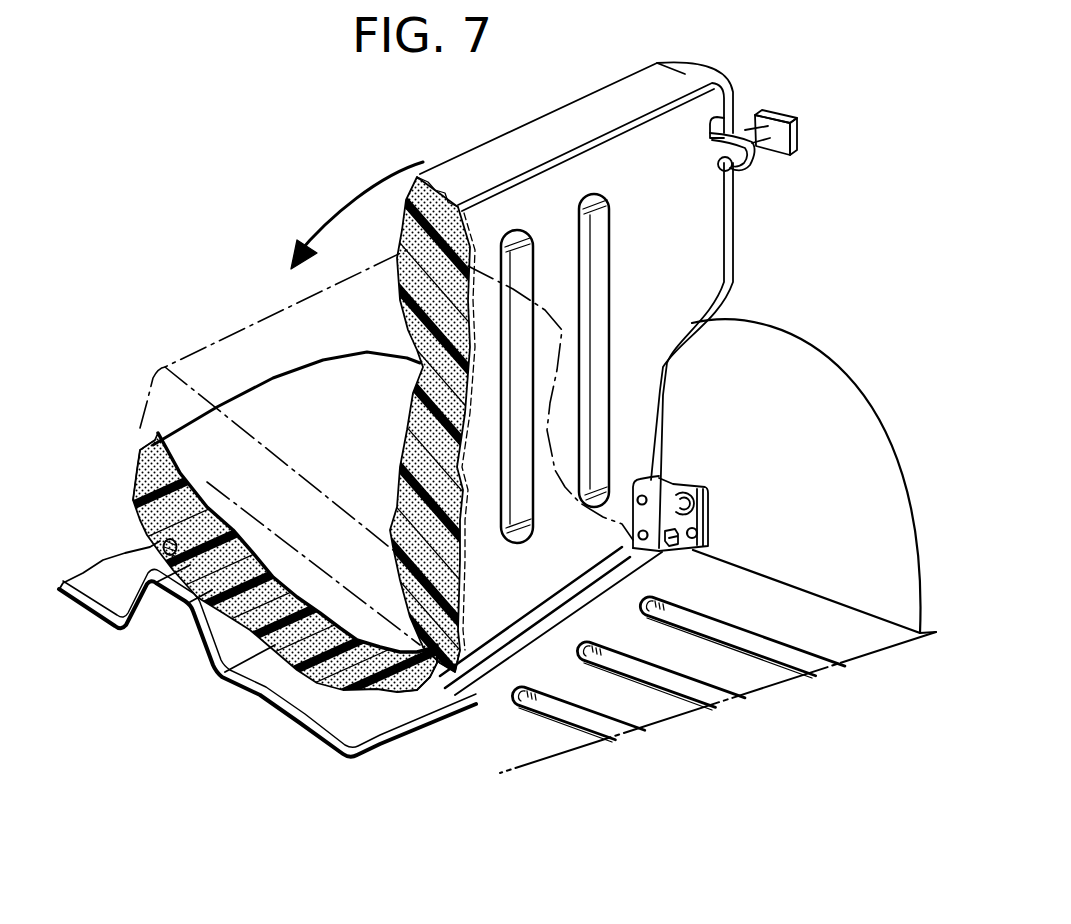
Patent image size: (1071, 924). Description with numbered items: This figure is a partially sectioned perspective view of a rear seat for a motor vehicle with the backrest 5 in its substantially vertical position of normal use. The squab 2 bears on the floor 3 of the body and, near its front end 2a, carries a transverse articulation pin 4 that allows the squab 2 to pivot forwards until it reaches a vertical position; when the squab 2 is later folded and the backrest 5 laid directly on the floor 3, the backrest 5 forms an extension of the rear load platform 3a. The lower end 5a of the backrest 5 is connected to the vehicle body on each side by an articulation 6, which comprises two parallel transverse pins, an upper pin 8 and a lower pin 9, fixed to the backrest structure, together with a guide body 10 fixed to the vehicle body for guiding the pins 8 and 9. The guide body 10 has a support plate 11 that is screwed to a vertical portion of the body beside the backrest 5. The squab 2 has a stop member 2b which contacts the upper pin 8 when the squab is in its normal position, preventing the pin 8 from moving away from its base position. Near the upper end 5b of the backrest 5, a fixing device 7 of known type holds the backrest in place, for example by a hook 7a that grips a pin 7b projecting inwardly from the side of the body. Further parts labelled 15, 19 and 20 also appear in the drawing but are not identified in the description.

The squab 2 is at (195, 615).
The front end of the squab 2a is at (140, 450).
The stop member 2b is at (422, 688).
The floor 3 is at (497, 657).
The rear load platform 3a is at (813, 617).
The transverse articulation pin 4 is at (163, 562).
The backrest 5 is at (407, 443).
The lower end of the backrest 5a is at (453, 667).
The upper end of the backrest 5b is at (460, 200).
The articulation 6 is at (670, 466).
The fixing device 7 is at (732, 164).
The hook 7a is at (711, 136).
The pin 7b is at (757, 112).
The upper pin 8 is at (642, 494).
The lower pin 9 is at (650, 547).
The guide body 10 is at (692, 492).
The support plate 11 is at (706, 495).
The bracket flange 15 is at (705, 512).
The hole 19 is at (697, 533).
The swing arc 20 is at (820, 380).